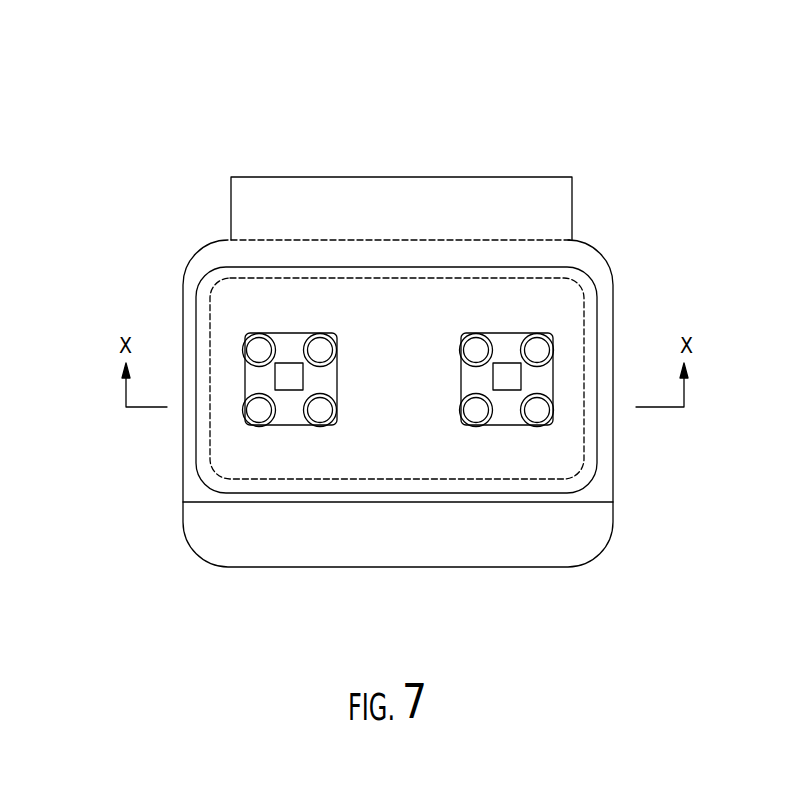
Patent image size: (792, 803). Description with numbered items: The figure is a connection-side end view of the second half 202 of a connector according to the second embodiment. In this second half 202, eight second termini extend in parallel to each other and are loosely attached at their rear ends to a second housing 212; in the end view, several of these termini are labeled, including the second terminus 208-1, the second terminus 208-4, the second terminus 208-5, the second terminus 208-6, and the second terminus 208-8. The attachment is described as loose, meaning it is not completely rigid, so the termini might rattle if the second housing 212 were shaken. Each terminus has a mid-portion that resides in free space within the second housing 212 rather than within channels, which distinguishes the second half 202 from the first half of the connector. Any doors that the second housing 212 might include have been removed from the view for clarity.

The second half of the connector 202 is at (540, 128).
The second housing 212 is at (353, 498).
The second terminus 208-4 is at (258, 348).
The second terminus 208-1 is at (537, 350).
The second terminus 208-5 is at (537, 413).
The second terminus 208-8 is at (257, 411).
The second terminus 208-6 is at (476, 412).